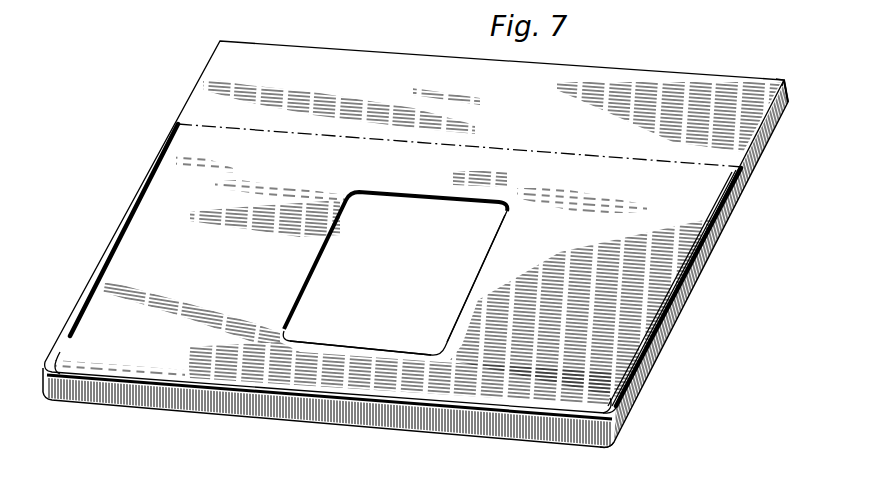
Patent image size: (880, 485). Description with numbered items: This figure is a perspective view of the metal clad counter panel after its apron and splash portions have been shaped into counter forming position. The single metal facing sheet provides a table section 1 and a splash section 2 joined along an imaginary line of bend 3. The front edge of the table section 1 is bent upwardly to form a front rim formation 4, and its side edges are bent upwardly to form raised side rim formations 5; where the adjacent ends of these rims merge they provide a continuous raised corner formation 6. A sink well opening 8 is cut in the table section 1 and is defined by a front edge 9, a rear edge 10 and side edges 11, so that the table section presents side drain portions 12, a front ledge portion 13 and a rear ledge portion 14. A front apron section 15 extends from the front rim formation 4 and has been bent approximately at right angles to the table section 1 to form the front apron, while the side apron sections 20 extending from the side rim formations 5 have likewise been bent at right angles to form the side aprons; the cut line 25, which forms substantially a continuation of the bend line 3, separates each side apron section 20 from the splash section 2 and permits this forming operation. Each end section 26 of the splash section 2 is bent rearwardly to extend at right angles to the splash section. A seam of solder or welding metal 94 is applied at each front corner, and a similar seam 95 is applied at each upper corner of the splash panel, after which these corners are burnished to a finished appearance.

The table section 1 is at (630, 348).
The splash section 2 is at (685, 100).
The imaginary line of bend 3 is at (640, 161).
The front rim formation 4 is at (168, 381).
The side rim formation 5 is at (138, 205).
The raised corner formation 6 is at (50, 366).
The sink well opening 8 is at (470, 264).
The front edge 9 is at (364, 348).
The rear edge 10 is at (423, 203).
The side edges 11 is at (300, 297).
The side drain portions 12 is at (408, 239).
The front ledge portion 13 is at (401, 373).
The rear ledge portion 14 is at (538, 189).
The front apron section 15 is at (330, 412).
The side apron section 20 is at (700, 263).
The cut line 25 is at (748, 181).
The end section 26 is at (784, 97).
The seam of solder or welding metal 94 is at (608, 446).
The seam of solder or welding metal 95 is at (782, 78).